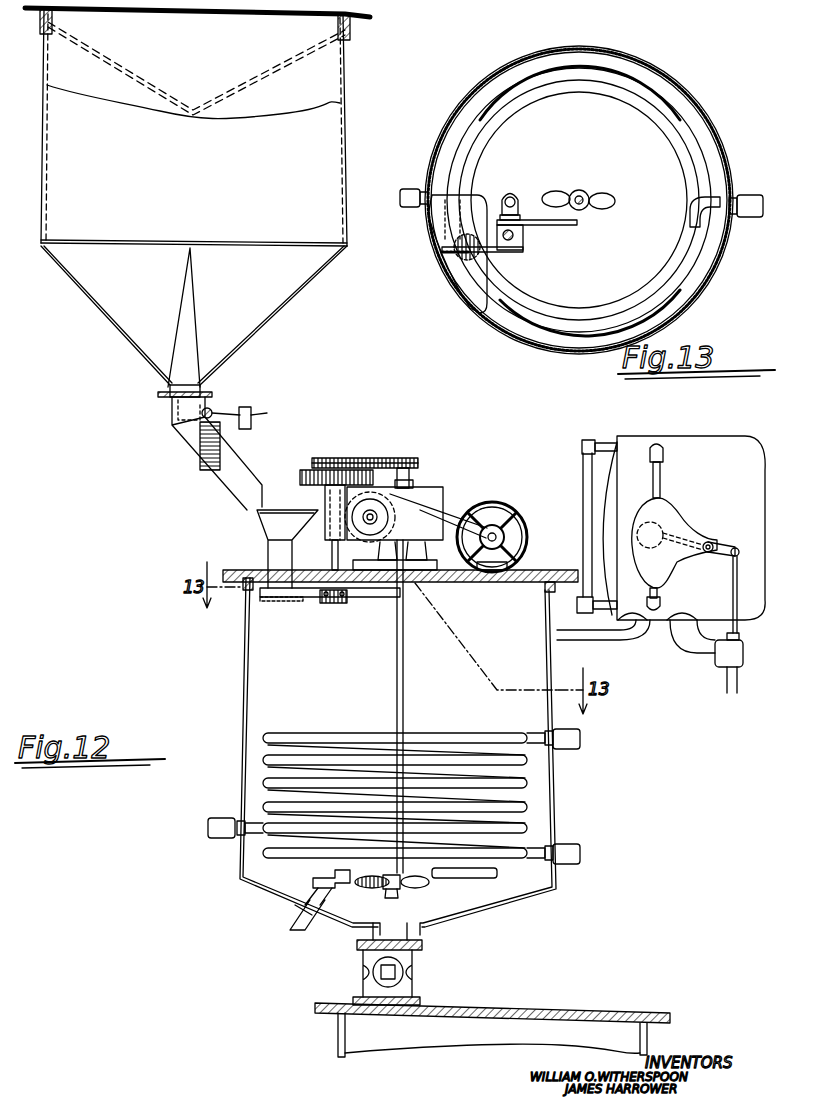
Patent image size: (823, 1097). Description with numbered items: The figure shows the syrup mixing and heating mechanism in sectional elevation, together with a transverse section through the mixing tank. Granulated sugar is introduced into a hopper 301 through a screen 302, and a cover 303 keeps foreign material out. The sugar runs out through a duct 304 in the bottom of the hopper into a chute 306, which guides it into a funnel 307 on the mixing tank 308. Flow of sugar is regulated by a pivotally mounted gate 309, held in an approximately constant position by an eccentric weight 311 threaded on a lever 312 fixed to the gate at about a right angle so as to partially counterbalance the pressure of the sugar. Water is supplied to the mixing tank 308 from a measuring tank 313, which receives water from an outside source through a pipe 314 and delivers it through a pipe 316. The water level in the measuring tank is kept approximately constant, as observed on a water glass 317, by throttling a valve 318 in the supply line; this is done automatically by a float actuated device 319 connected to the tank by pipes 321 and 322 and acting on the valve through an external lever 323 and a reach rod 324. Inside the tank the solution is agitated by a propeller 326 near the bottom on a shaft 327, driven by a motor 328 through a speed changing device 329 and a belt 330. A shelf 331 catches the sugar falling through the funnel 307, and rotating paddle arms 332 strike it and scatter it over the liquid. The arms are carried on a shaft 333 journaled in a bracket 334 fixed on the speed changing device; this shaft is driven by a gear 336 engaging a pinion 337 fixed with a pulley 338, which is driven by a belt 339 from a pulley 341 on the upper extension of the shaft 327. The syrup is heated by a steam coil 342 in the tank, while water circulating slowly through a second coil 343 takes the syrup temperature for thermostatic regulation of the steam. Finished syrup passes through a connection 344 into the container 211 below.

In FIG. 12, the hopper 301 is at (348, 70).
In FIG. 12, the screen 302 is at (80, 44).
In FIG. 12, the cover 303 is at (360, 16).
In FIG. 12, the duct 304 is at (175, 404).
In FIG. 12, the chute 306 is at (215, 478).
In FIG. 12, the funnel 307 is at (257, 527).
In FIG. 13, the funnel 307 is at (457, 254).
In FIG. 12, the mixing tank 308 is at (243, 650).
In FIG. 13, the mixing tank 308 is at (708, 107).
In FIG. 12, the gate 309 is at (222, 444).
In FIG. 12, the eccentric weight 311 is at (246, 408).
In FIG. 12, the lever 312 is at (267, 413).
In FIG. 12, the measuring tank 313 is at (683, 445).
In FIG. 12, the pipe 314 is at (737, 688).
In FIG. 12, the pipe 316 is at (600, 645).
In FIG. 12, the water glass 317 is at (583, 506).
In FIG. 12, the valve 318 is at (743, 656).
In FIG. 12, the float actuated device 319 is at (664, 504).
In FIG. 12, the pipe 321 is at (660, 473).
In FIG. 12, the pipe 322 is at (660, 596).
In FIG. 12, the external lever 323 is at (725, 545).
In FIG. 12, the reach rod 324 is at (733, 572).
In FIG. 12, the propeller 326 is at (410, 888).
In FIG. 13, the propeller 326 is at (602, 193).
In FIG. 12, the shaft 327 is at (403, 682).
In FIG. 13, the shaft 327 is at (579, 190).
In FIG. 12, the motor 328 is at (505, 510).
In FIG. 12, the speed changing device 329 is at (425, 505).
In FIG. 12, the belt 330 is at (463, 510).
In FIG. 12, the shelf 331 is at (275, 600).
In FIG. 13, the shelf 331 is at (470, 197).
In FIG. 12, the paddle arms 332 is at (342, 596).
In FIG. 13, the paddle arms 332 is at (567, 225).
In FIG. 12, the shaft 333 is at (325, 575).
In FIG. 13, the shaft 333 is at (523, 248).
In FIG. 12, the bracket 334 is at (348, 575).
In FIG. 12, the gear 336 is at (325, 492).
In FIG. 12, the pinion 337 is at (300, 472).
In FIG. 12, the pulley 338 is at (335, 448).
In FIG. 12, the belt 339 is at (375, 458).
In FIG. 12, the pulley 341 is at (410, 468).
In FIG. 12, the steam coil 342 is at (300, 745).
In FIG. 13, the steam coil 342 is at (528, 90).
In FIG. 12, the second coil 343 is at (470, 878).
In FIG. 13, the second coil 343 is at (690, 212).
In FIG. 12, the connection 344 is at (412, 972).
In FIG. 12, the container 211 is at (345, 1039).